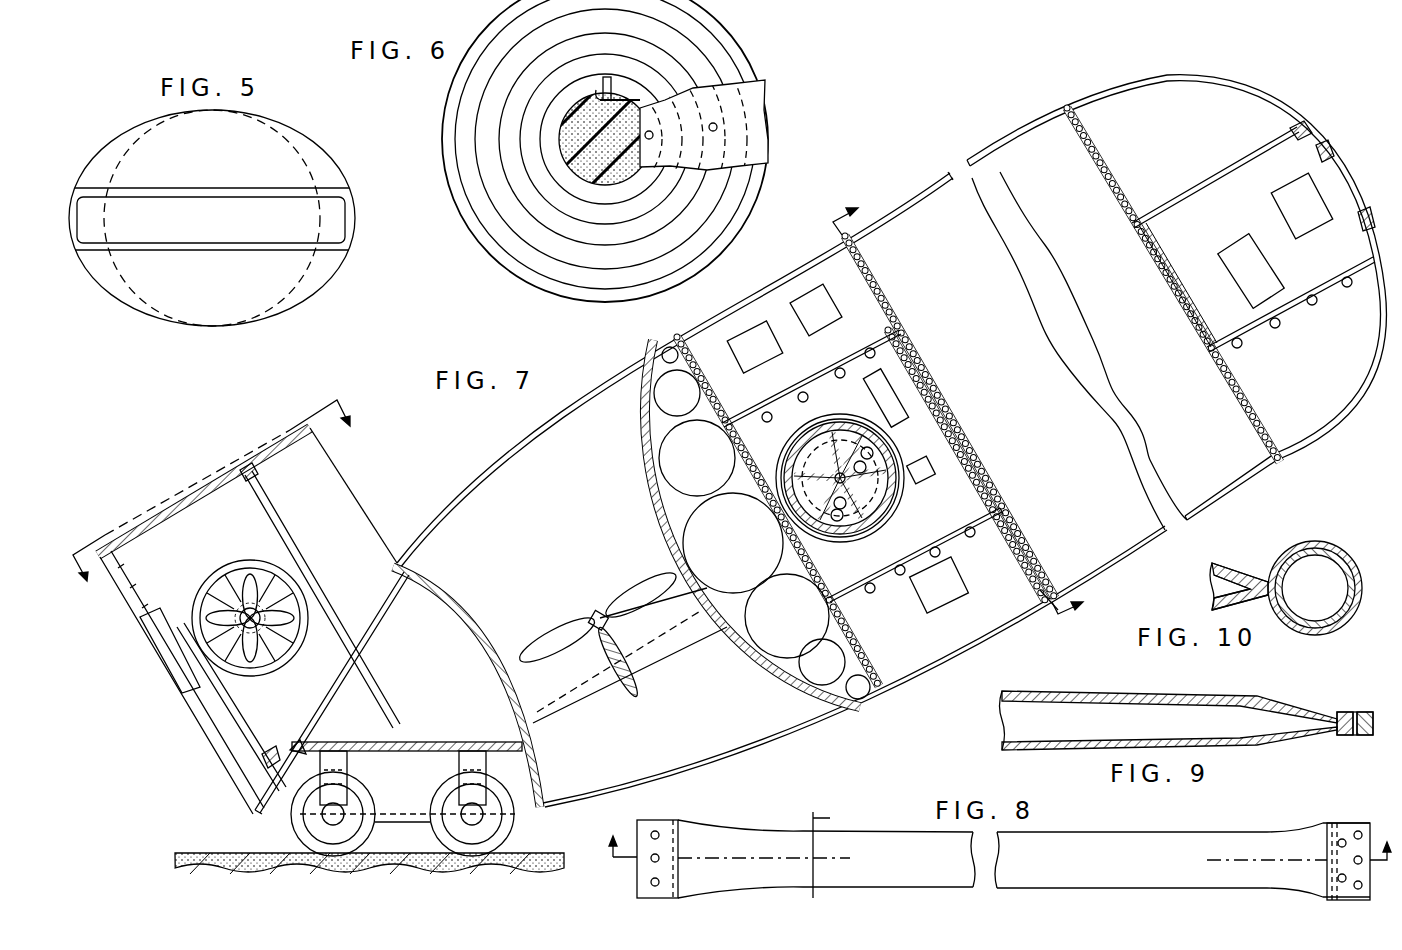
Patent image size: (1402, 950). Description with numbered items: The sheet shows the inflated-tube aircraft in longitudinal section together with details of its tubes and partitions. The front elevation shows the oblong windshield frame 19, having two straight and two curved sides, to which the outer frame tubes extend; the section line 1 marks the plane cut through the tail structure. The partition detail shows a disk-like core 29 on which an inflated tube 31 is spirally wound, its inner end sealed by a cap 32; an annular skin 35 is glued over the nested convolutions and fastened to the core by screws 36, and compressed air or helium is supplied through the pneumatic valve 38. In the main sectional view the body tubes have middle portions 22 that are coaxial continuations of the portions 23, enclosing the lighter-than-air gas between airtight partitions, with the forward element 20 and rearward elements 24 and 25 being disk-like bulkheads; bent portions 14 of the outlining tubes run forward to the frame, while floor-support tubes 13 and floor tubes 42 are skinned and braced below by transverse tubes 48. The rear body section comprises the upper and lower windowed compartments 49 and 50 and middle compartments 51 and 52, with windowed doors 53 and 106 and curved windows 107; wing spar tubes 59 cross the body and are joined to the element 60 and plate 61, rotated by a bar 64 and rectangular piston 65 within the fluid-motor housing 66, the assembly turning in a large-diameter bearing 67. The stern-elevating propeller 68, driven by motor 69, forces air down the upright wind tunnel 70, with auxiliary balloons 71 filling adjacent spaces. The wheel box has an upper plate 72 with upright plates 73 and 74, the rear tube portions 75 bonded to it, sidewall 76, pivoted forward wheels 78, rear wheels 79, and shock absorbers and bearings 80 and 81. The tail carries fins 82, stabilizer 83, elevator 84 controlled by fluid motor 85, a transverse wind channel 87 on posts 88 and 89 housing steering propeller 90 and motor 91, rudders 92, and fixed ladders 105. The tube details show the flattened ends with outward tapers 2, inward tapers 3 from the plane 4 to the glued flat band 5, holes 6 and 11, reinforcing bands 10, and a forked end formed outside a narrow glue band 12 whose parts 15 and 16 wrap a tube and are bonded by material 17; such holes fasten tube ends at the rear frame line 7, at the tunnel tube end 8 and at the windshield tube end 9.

In FIG. 7, the section line 1- 1 is at (218, 503).
In FIG. 8, the outward tapers 2 is at (1290, 830).
In FIG. 9, the inward tapers 3 is at (1242, 740).
In FIG. 8, the plane 4 is at (831, 853).
In FIG. 8, the flat band 5 is at (668, 824).
In FIG. 7, the holes 6 is at (966, 402).
In FIG. 8, the holes 6 is at (652, 860).
In FIG. 7, the rear vehicle-frame line 7 is at (252, 812).
In FIG. 7, the tube end 8 is at (662, 344).
In FIG. 7, the tube end 9 is at (1330, 136).
In FIG. 8, the tube end 9 is at (999, 838).
In FIG. 8, the bands 10 is at (686, 852).
In FIG. 9, the bands 10 is at (1336, 716).
In FIG. 8, the additional holes 11 is at (1338, 846).
In FIG. 8, the narrow band 12 is at (1338, 878).
In FIG. 10, the narrow band 12 is at (1260, 576).
In FIG. 7, the floor-support tubes 13 is at (1200, 172).
In FIG. 7, the bent portions 14 is at (1186, 92).
In FIG. 10, the bent portions 14 is at (1286, 596).
In FIG. 10, the fork part 15 is at (1322, 540).
In FIG. 10, the fork part 16 is at (1336, 634).
In FIG. 10, the bonding material 17 is at (1340, 606).
In FIG. 5, the windshield frame 19 is at (264, 198).
In FIG. 7, the windshield frame 19 is at (1333, 150).
In FIG. 7, the front partition 20 is at (1100, 190).
In FIG. 7, the middle portions 22 is at (940, 186).
In FIG. 7, the tube portions 23 is at (724, 303).
In FIG. 7, the rearward partition 24 is at (856, 626).
In FIG. 7, the rearward partition 25 is at (896, 292).
In FIG. 6, the core 29 is at (613, 144).
In FIG. 6, the inflated tube 31 is at (478, 206).
In FIG. 6, the cap 32 is at (602, 82).
In FIG. 6, the annular skin 35 is at (768, 140).
In FIG. 6, the screws 36 is at (654, 136).
In FIG. 6, the pneumatic valve 38 is at (716, 124).
In FIG. 7, the floor tubes 42 is at (786, 392).
In FIG. 7, the transverse floor-bracing tubes 48 is at (806, 396).
In FIG. 7, the upper windowed compartment 49 is at (820, 369).
In FIG. 7, the lower windowed compartment 50 is at (960, 637).
In FIG. 7, the middle compartment 51 is at (777, 447).
In FIG. 7, the middle compartment 52 is at (907, 550).
In FIG. 7, the doors 53 is at (892, 408).
In FIG. 7, the spar tubes 59 is at (966, 465).
In FIG. 7, the hollow element 60 is at (862, 474).
In FIG. 7, the plate 61 is at (846, 506).
In FIG. 7, the bar 64 is at (827, 518).
In FIG. 7, the rectangular piston 65 is at (840, 476).
In FIG. 7, the fluid-motor housing 66 is at (836, 422).
In FIG. 7, the large-diameter bearing 67 is at (906, 494).
In FIG. 7, the stern-elevating propeller 68 is at (573, 625).
In FIG. 7, the motor 69 is at (618, 700).
In FIG. 7, the wind tunnel 70 is at (648, 508).
In FIG. 7, the auxiliary balloons 71 is at (687, 401).
In FIG. 7, the upper horizontal plate 72 is at (452, 740).
In FIG. 7, the upright plate 73 is at (302, 752).
In FIG. 7, the upright plate 74 is at (530, 812).
In FIG. 7, the rear portions 75 is at (278, 750).
In FIG. 7, the fore-and-aft sidewall 76 is at (411, 805).
In FIG. 7, the forward wheels 78 is at (486, 776).
In FIG. 7, the rear wheels 79 is at (362, 836).
In FIG. 7, the shock absorbers 80 is at (362, 768).
In FIG. 7, the bearings 81 is at (292, 836).
In FIG. 7, the tail fins 82 is at (242, 550).
In FIG. 7, the horizontal stabilizer 83 is at (284, 452).
In FIG. 7, the elevator 84 is at (210, 500).
In FIG. 7, the fluid motor 85 is at (160, 672).
In FIG. 7, the transverse wind channel 87 is at (290, 666).
In FIG. 7, the post 88 is at (232, 694).
In FIG. 7, the post 89 is at (266, 496).
In FIG. 7, the steering propeller 90 is at (204, 600).
In FIG. 7, the motor 91 is at (240, 628).
In FIG. 7, the rudders 92 is at (1308, 273).
In FIG. 7, the fixed ladders 105 is at (1036, 596).
In FIG. 7, the door 106 is at (1236, 244).
In FIG. 7, the windows 107 is at (1280, 188).